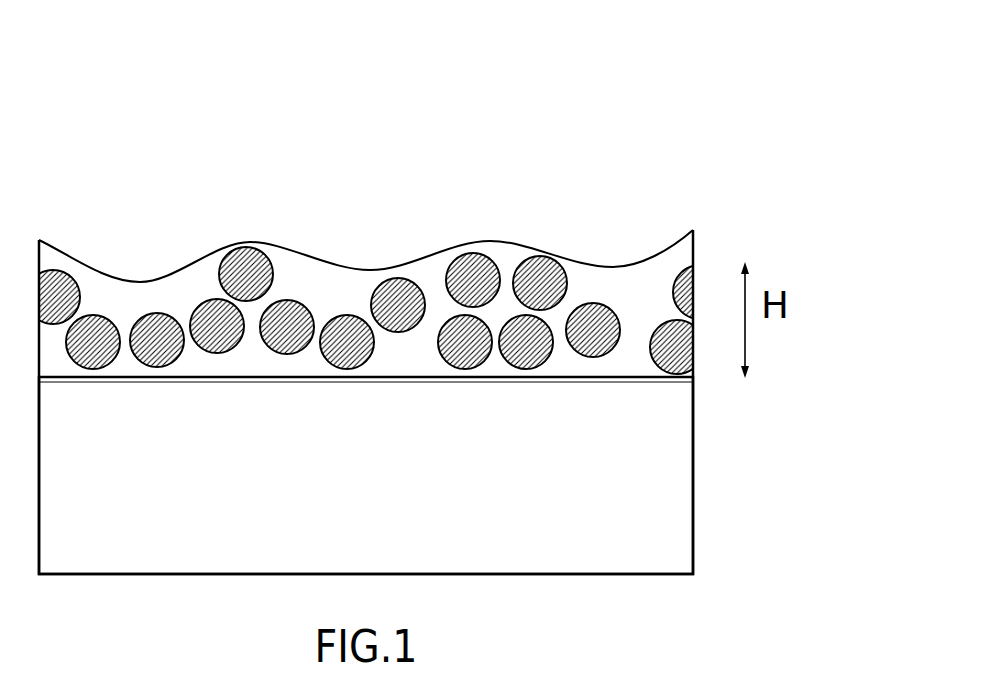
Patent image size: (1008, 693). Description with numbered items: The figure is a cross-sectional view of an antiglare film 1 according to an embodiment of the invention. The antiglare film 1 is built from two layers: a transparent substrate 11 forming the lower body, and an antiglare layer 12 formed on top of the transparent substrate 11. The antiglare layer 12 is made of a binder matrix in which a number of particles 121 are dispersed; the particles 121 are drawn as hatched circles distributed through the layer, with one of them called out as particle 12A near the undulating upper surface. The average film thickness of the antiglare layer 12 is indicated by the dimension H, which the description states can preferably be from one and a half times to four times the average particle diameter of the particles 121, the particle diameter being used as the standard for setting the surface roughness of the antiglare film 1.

The antiglare film 1 is at (648, 118).
The transparent substrate 11 is at (647, 457).
The antiglare layer 12 is at (798, 229).
The particle 121 is at (580, 282).
The particle 12A is at (242, 268).